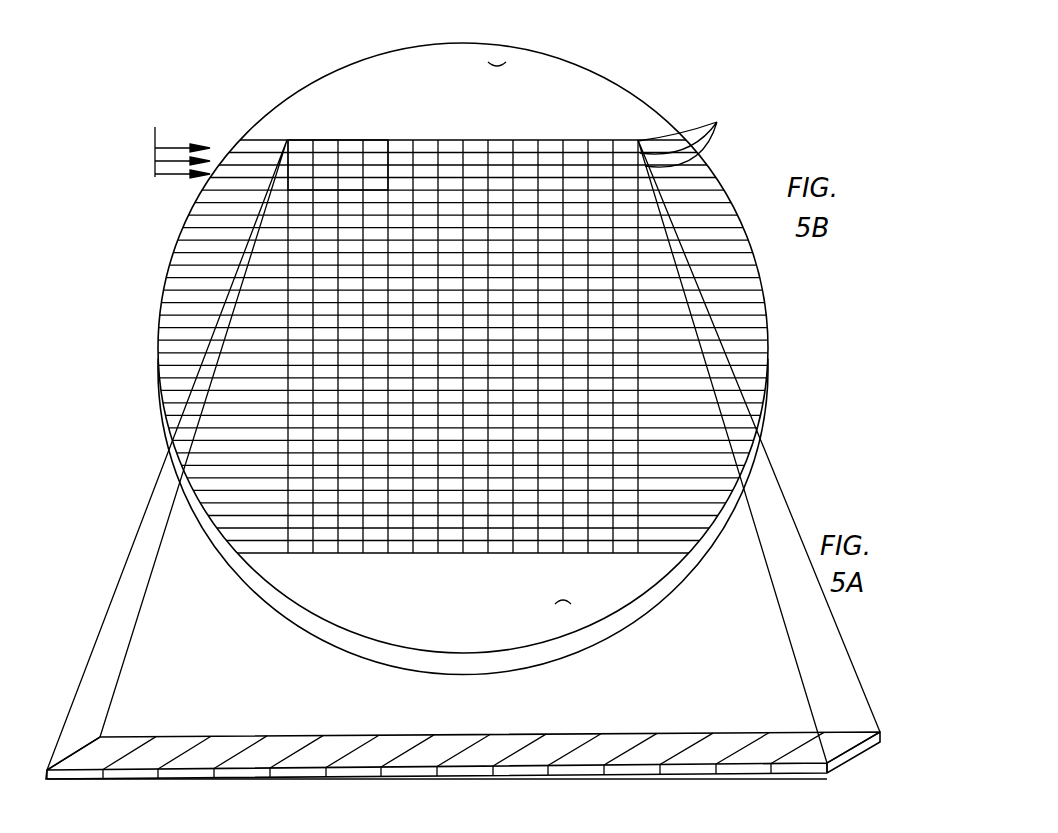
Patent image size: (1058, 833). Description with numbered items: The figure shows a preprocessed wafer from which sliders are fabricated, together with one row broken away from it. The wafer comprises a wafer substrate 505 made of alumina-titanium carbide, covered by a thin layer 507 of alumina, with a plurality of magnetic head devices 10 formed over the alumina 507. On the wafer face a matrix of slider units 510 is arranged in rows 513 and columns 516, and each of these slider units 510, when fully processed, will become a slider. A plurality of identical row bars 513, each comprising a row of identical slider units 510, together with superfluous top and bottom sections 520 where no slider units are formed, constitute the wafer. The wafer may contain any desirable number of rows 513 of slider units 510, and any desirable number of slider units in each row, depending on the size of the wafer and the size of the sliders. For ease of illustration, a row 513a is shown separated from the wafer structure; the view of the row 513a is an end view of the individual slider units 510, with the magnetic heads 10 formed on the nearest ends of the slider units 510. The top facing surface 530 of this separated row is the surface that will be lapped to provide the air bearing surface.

In FIG. 5B, the thin layer of alumina 507 is at (413, 56).
In FIG. 5B, the wafer substrate 505 is at (667, 580).
In FIG. 5B, the top and bottom sections 520 is at (497, 64).
In FIG. 5B, the slider unit 510 is at (500, 147).
In FIG. 5A, the slider unit 510 is at (227, 743).
In FIG. 5B, the column 516 is at (372, 147).
In FIG. 5B, the row bar 513 is at (439, 137).
In FIG. 5A, the row 513a is at (74, 724).
In FIG. 5A, the top facing surface 530 is at (465, 740).
In FIG. 5A, the magnetic head device 10 is at (233, 779).